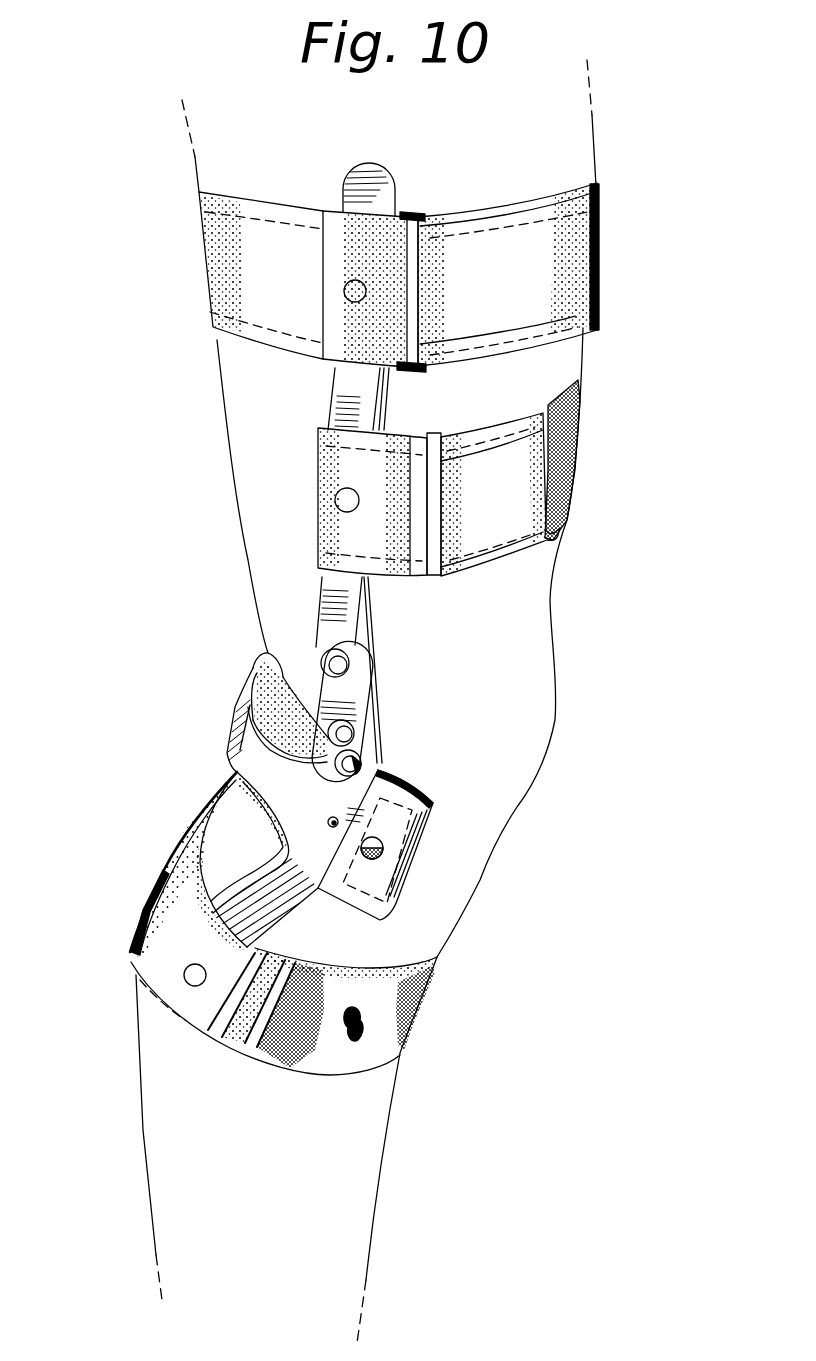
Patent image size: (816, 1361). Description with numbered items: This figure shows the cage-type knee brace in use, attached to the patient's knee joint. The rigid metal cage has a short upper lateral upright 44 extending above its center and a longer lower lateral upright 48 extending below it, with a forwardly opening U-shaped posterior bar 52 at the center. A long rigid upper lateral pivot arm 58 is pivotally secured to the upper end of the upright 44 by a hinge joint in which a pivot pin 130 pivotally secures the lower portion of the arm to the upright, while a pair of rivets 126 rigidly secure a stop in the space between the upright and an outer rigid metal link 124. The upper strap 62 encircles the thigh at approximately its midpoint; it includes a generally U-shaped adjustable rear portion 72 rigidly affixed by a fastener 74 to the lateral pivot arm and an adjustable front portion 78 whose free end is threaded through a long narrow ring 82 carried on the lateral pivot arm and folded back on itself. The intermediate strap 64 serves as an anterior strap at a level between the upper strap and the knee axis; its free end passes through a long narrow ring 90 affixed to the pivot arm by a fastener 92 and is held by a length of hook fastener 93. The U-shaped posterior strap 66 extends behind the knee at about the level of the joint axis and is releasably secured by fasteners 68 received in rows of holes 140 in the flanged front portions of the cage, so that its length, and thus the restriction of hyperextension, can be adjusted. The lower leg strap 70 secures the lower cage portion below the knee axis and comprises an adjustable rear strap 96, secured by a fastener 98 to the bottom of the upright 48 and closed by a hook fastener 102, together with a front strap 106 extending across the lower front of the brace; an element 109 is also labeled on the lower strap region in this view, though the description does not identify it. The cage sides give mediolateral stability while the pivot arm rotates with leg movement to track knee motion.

The upper lateral upright 44 is at (352, 766).
The lower lateral upright 48 is at (254, 944).
The U-shaped posterior bar 52 is at (238, 708).
The upper lateral pivot arm 58 is at (372, 168).
The upper strap 62 is at (500, 258).
The intermediate strap 64 is at (578, 410).
The U-shaped posterior strap 66 is at (262, 655).
The fastener 68 is at (382, 847).
The lower leg strap 70 is at (395, 1047).
The adjustable rear portion 72 is at (263, 230).
The fastener 74 is at (345, 292).
The adjustable front portion 78 is at (560, 247).
The long narrow ring 82 is at (409, 217).
The long narrow ring 90 is at (431, 436).
The fastener 92 is at (334, 504).
The hook fastener 93 is at (500, 495).
The adjustable rear strap 96 is at (180, 836).
The fastener 98 is at (183, 974).
The hook fastener 102 is at (152, 913).
The front strap 106 is at (337, 1065).
The strap stripe 109 is at (198, 1043).
The outer rigid metal link 124 is at (340, 697).
The rivets 126 is at (356, 724).
The pivot pin 130 is at (338, 667).
The holes 140 is at (335, 818).